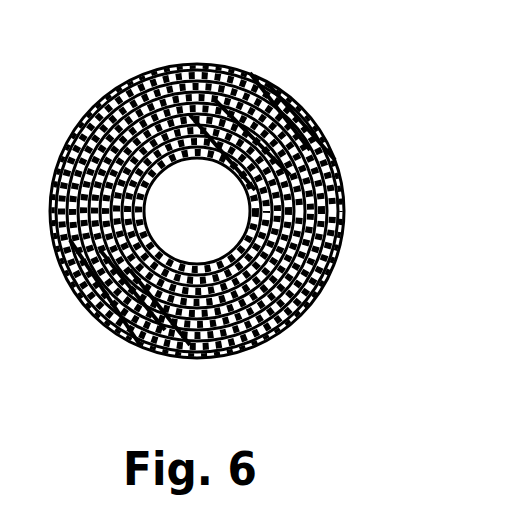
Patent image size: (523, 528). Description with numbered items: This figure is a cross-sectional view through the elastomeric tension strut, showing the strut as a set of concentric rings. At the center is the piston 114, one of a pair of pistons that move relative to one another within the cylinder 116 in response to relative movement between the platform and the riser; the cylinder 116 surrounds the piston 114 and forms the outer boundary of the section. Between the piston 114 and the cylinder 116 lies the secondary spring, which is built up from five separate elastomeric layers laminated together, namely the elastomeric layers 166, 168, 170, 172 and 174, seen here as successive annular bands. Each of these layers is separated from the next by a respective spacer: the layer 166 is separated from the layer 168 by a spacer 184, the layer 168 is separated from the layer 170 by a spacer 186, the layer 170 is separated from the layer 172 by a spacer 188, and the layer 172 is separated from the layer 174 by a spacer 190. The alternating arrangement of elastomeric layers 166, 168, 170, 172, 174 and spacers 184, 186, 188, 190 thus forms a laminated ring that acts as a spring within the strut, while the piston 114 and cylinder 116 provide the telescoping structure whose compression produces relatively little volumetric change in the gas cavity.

The piston 114 is at (217, 353).
The cylinder 116 is at (277, 100).
The elastomeric layer 166 is at (270, 333).
The elastomeric layer 168 is at (300, 262).
The elastomeric layer 170 is at (77, 267).
The elastomeric layer 172 is at (128, 333).
The elastomeric layer 174 is at (162, 337).
The spacer 184 is at (198, 67).
The spacer 186 is at (158, 67).
The spacer 188 is at (248, 70).
The spacer 190 is at (72, 140).